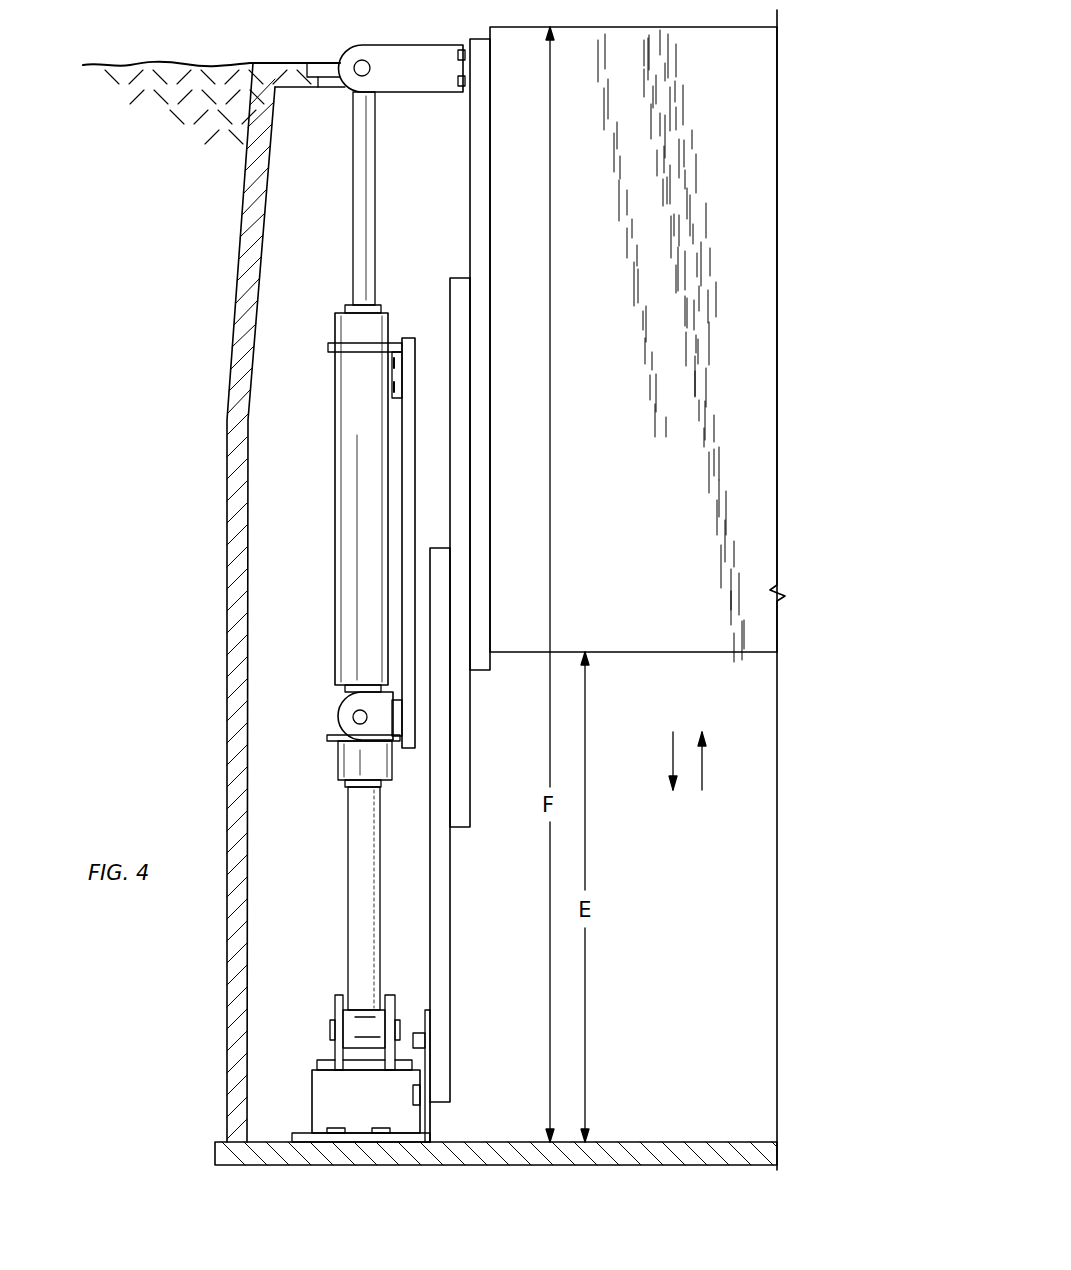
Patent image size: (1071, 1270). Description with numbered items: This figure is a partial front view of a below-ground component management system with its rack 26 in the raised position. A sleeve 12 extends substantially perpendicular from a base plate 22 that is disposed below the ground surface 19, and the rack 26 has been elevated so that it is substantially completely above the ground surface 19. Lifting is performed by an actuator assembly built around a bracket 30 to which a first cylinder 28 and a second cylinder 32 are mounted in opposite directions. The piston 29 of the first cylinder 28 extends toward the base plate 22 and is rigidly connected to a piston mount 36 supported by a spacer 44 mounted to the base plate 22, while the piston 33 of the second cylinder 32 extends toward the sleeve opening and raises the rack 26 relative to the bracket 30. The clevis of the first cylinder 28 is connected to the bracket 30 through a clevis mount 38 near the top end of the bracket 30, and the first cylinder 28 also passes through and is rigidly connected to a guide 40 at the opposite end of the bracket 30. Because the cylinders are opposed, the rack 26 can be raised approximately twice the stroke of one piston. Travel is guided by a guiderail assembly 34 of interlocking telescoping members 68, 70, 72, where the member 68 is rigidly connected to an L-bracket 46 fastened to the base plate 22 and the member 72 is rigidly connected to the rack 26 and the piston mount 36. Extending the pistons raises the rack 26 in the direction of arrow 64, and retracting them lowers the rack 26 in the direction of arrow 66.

The ground surface 19 is at (192, 62).
The sleeve 12 is at (240, 292).
The base plate 22 is at (500, 1142).
The component rack 26 is at (595, 579).
The guiderail assembly 34 is at (471, 590).
The telescoping member 72 is at (482, 210).
The telescoping member 70 is at (465, 738).
The telescoping member 68 is at (440, 970).
The piston mount 36 is at (403, 78).
The piston 33 is at (362, 255).
The second cylinder 32 is at (351, 393).
The clevis mount 38 is at (335, 375).
The guide 40 is at (328, 347).
The bracket 30 is at (412, 330).
The first cylinder 28 is at (338, 765).
The piston 29 is at (362, 900).
The spacer 44 is at (345, 1111).
The L-bracket 46 is at (300, 1135).
The arrow 64 is at (670, 762).
The arrow 66 is at (705, 762).